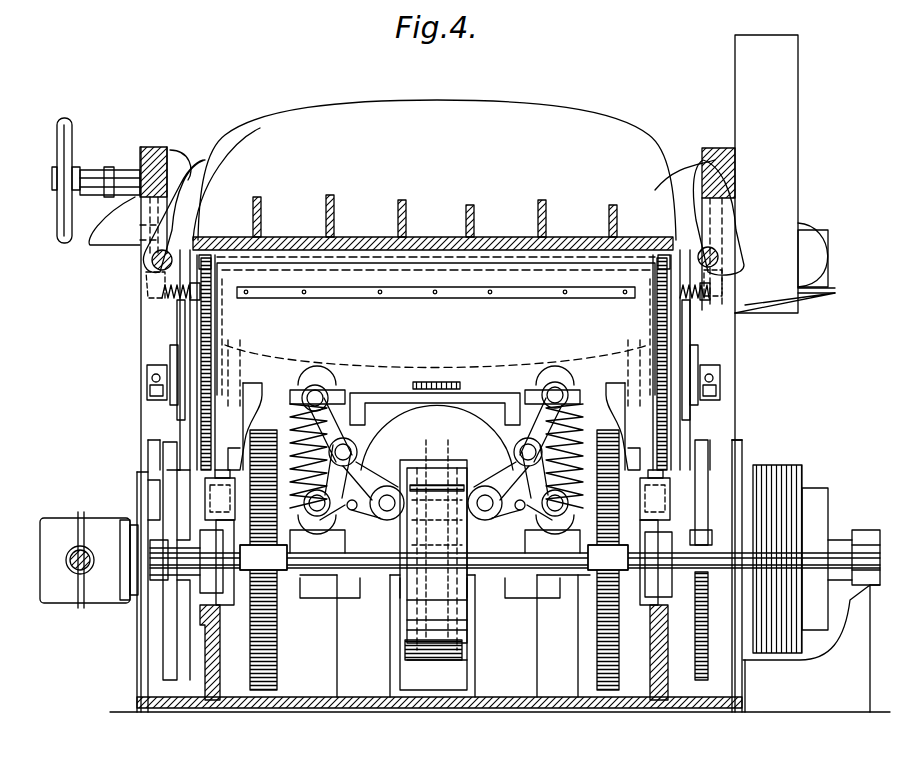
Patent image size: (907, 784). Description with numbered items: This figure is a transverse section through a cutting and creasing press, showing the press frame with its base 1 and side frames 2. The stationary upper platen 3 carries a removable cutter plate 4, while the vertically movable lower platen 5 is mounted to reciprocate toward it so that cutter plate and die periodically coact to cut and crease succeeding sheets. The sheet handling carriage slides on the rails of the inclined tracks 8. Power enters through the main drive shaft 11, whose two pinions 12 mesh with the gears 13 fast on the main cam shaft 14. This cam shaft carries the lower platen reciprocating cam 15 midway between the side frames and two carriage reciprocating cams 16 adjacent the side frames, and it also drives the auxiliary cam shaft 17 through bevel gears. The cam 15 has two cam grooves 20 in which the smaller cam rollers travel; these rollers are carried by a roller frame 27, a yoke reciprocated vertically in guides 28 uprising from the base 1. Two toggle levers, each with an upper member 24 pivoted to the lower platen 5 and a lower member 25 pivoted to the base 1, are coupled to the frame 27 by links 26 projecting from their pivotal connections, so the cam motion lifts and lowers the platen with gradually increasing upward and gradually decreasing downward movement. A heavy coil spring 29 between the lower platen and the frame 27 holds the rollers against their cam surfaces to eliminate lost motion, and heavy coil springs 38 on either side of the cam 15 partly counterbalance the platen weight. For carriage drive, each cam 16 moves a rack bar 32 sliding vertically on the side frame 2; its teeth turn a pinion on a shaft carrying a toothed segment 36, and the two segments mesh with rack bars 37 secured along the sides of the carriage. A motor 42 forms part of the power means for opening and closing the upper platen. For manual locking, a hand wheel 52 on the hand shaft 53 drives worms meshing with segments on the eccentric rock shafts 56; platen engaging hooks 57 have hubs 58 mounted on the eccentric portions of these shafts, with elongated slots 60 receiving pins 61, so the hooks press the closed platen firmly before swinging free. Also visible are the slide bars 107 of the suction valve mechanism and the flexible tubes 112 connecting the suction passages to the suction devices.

The base 1 is at (562, 712).
The side frames 2 is at (140, 428).
The stationary upper platen 3 is at (604, 130).
The removable cutter plate 4 is at (500, 247).
The vertically movable lower platen 5 is at (436, 329).
The tracks 8 is at (205, 262).
The main drive shaft 11 is at (558, 566).
The pinions 12 is at (266, 580).
The gears 13 is at (262, 660).
The main cam shaft 14 is at (152, 575).
The lower platen reciprocating cam 15 is at (460, 656).
The carriage reciprocating cams 16 is at (167, 490).
The auxiliary cam shaft 17 is at (66, 565).
The cam grooves 20 is at (412, 648).
The upper toggle member 24 is at (340, 425).
The lower toggle member 25 is at (436, 450).
The links 26 is at (375, 488).
The roller frame 27 is at (452, 490).
The guides 28 is at (435, 407).
The heavy coil spring 29 is at (440, 384).
The rack bar 32 is at (180, 407).
The toothed segment 36 is at (205, 312).
The rack bars 37 is at (212, 290).
The heavy coil springs 38 is at (300, 420).
The motor 42 is at (836, 252).
The hand wheel 52 is at (57, 148).
The hand shaft 53 is at (96, 176).
The eccentric rock shafts 56 is at (163, 274).
The platen engaging hooks 57 is at (208, 168).
The hubs 58 is at (148, 256).
The circumferentially elongated slots 60 is at (152, 262).
The pins 61 is at (170, 292).
The slide bars 107 is at (228, 464).
The tubes 112 is at (248, 432).